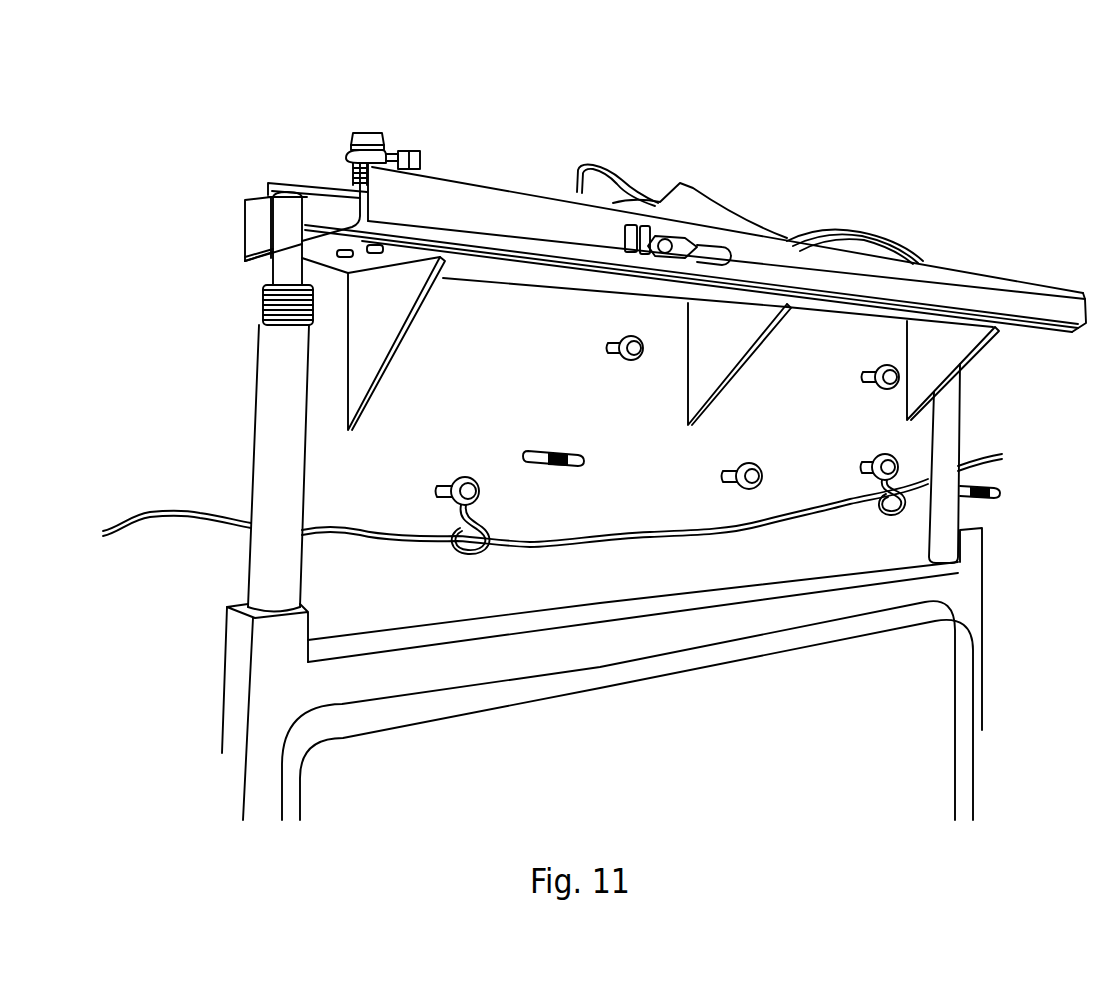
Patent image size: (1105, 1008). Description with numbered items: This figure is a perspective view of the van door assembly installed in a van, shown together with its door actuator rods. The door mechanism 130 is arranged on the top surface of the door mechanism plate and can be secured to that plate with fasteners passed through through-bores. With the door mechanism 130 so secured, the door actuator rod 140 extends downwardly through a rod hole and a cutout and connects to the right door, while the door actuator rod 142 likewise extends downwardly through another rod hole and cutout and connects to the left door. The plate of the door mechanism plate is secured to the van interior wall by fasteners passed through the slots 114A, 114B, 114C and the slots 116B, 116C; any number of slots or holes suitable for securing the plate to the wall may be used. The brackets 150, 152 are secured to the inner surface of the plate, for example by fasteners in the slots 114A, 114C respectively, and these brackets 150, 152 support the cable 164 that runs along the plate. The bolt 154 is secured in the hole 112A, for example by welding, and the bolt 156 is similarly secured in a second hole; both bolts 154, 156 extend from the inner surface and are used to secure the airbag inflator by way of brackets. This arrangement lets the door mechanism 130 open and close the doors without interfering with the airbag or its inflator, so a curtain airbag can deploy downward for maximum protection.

The door mechanism 130 is at (479, 156).
The door actuator rod 140 is at (276, 389).
The door actuator rod 142 is at (962, 389).
The hole 112A is at (523, 455).
The bolt 154 is at (560, 450).
The slot 114A is at (448, 488).
The slot 114B is at (725, 477).
The slot 114C is at (868, 465).
The slot 116B is at (610, 343).
The slot 116C is at (864, 376).
The bracket 150 is at (456, 548).
The bracket 152 is at (896, 504).
The bolt 156 is at (1002, 492).
The cable 164 is at (636, 532).